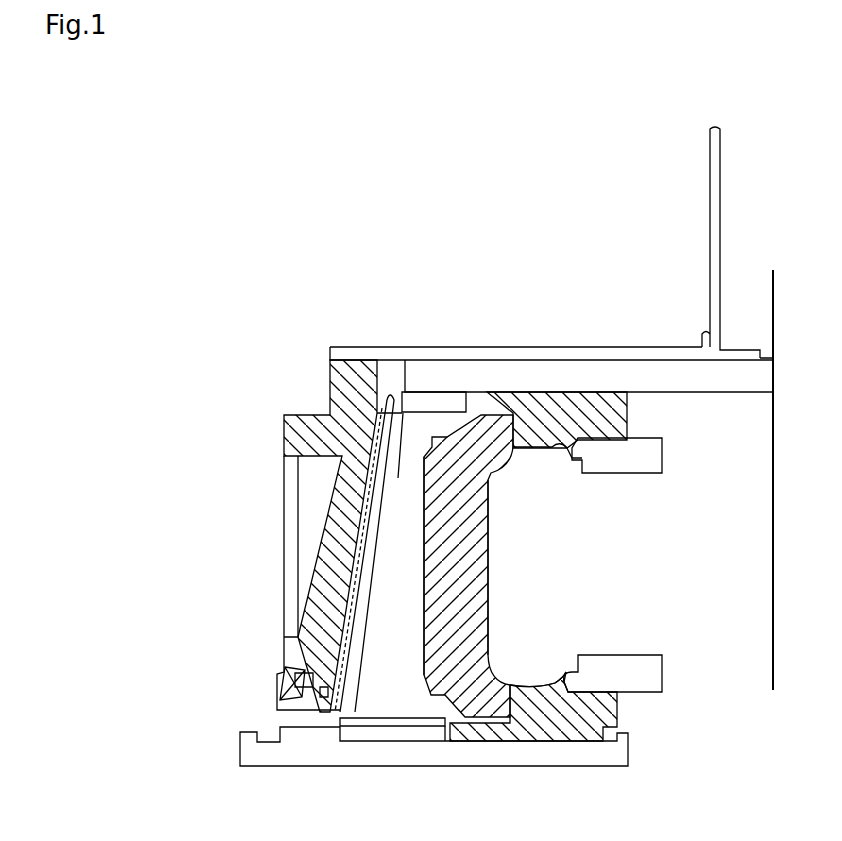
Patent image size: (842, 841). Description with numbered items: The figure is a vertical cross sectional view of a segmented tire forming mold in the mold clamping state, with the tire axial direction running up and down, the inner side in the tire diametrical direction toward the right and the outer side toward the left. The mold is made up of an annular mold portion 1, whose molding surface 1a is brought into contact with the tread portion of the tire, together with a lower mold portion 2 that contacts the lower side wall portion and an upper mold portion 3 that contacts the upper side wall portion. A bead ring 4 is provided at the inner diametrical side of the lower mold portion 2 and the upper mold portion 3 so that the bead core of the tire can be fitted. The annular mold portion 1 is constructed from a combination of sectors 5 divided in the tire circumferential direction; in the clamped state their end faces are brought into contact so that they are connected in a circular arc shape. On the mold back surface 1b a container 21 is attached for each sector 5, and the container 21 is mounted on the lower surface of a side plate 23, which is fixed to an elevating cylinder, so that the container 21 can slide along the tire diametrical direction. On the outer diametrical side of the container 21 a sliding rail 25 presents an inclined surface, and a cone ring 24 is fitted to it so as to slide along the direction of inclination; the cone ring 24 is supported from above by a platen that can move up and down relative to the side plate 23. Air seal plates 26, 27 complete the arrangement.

The annular mold portion 1 is at (499, 627).
The molding surface 1a is at (489, 583).
The mold back surface 1b is at (423, 612).
The lower mold portion 2 is at (531, 730).
The upper mold portion 3 is at (558, 402).
The bead ring 4 is at (640, 462).
The sector 5 is at (485, 533).
The container 21 is at (383, 700).
The side plate 23 is at (628, 380).
The cone ring 24 is at (302, 425).
The sliding rail 25 is at (342, 640).
The air seal plate 26 is at (460, 353).
The air seal plate 27 is at (722, 204).